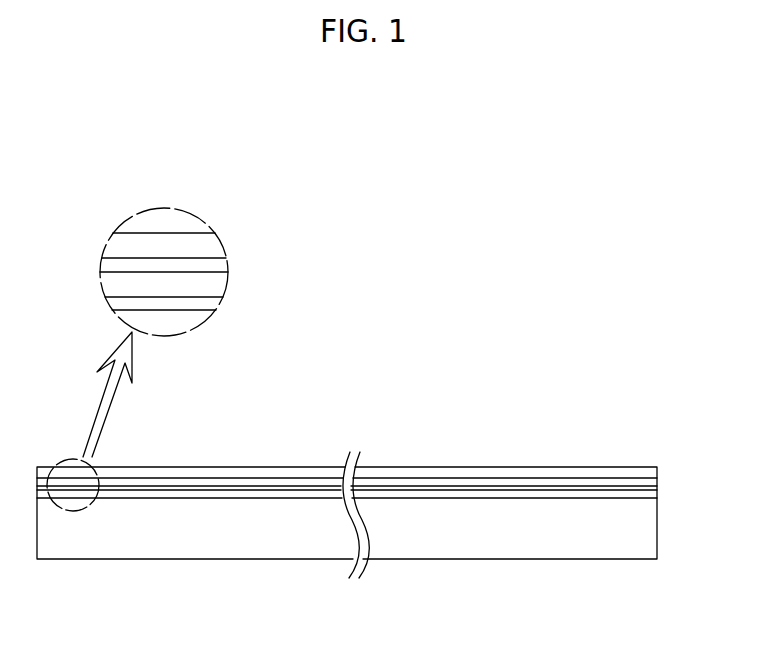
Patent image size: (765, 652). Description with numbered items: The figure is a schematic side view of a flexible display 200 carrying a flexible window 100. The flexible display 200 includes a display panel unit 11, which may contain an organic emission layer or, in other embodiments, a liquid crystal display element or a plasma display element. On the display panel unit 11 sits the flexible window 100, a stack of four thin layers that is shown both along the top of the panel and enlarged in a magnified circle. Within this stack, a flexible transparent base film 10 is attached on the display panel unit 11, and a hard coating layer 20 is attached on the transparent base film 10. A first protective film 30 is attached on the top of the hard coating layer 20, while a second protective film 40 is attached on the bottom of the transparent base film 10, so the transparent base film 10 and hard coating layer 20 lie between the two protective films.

The flexible display 200 is at (583, 393).
The flexible window 100 is at (280, 250).
The first protective film 30 is at (215, 245).
The hard coating layer 20 is at (227, 262).
The transparent base film 10 is at (228, 283).
The second protective film 40 is at (213, 303).
The display panel unit 11 is at (195, 322).